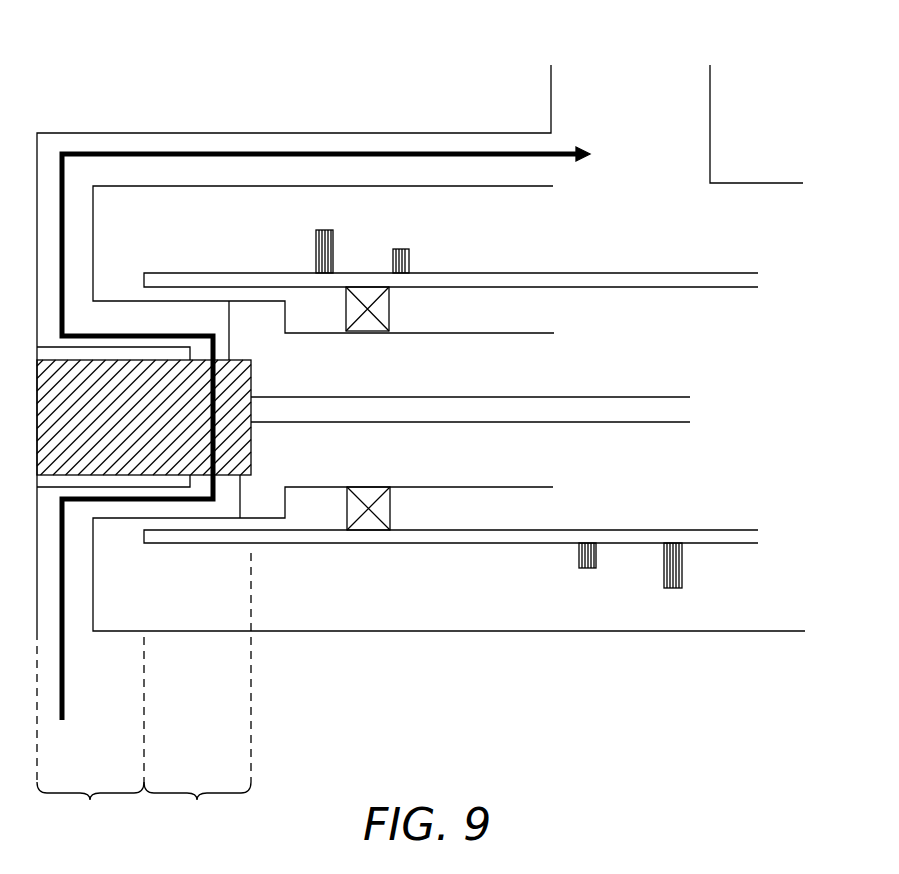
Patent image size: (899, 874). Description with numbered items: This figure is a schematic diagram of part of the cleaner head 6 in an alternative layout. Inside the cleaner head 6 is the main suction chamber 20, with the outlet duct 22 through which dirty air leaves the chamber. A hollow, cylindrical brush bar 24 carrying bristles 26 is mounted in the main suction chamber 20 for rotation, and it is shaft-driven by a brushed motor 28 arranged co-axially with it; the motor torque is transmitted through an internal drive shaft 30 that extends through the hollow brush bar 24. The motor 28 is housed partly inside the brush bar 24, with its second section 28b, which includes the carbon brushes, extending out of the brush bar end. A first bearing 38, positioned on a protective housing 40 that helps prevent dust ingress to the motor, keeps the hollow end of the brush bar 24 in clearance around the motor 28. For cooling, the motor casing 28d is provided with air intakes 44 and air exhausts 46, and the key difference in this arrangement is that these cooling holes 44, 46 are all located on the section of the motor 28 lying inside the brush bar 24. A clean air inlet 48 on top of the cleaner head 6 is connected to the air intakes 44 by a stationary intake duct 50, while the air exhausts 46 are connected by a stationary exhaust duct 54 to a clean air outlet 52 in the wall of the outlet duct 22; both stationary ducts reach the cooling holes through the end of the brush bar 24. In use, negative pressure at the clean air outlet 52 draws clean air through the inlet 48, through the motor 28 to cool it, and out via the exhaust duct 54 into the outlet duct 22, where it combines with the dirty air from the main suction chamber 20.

The cleaner head 6 is at (131, 86).
The stationary exhaust duct 54 is at (295, 132).
The clean air outlet 52 is at (548, 143).
The clean air inlet 48 is at (79, 630).
The stationary intake duct 50 is at (85, 580).
The air exhausts 46 is at (216, 353).
The air intakes 44 is at (216, 477).
The motor casing 28d is at (128, 359).
The brushed motor 28 is at (250, 371).
The internal drive shaft 30 is at (616, 397).
The brush bar 24 is at (618, 272).
The protective housing 40 is at (515, 331).
The first bearing 38 is at (390, 306).
The bristles 26 is at (683, 573).
The outlet duct 22 is at (701, 98).
The main suction chamber 20 is at (378, 620).
The second section of the motor 28b is at (144, 693).